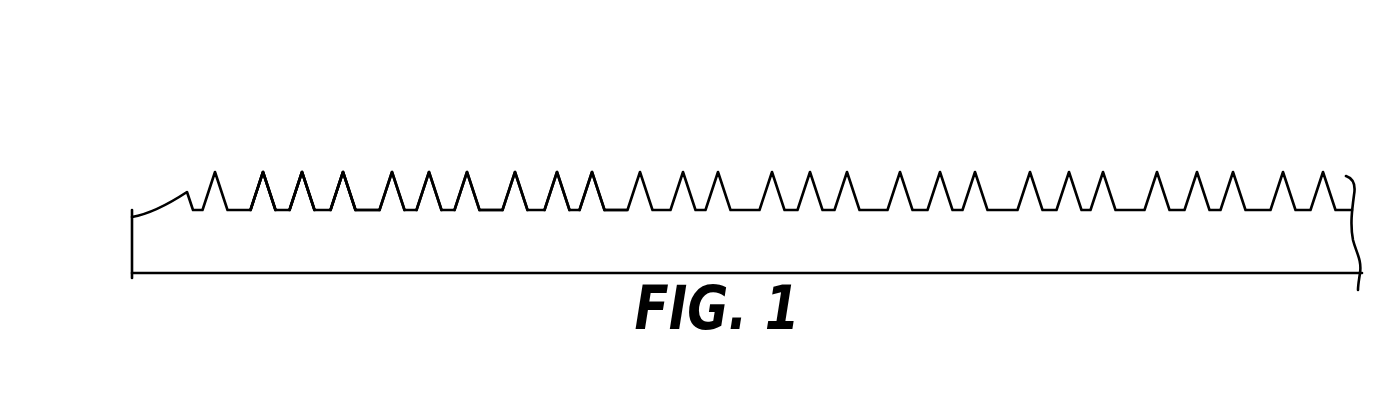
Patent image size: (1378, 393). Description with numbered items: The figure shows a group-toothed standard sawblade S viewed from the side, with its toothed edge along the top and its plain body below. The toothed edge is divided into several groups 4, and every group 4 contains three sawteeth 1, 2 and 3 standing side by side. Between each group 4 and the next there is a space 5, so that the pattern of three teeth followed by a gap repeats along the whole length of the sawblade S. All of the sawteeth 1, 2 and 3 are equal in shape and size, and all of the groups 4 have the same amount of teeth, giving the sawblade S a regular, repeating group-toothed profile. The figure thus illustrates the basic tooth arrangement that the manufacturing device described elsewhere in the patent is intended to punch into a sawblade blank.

The sawtooth 1 is at (262, 170).
The sawtooth 2 is at (302, 170).
The sawtooth 3 is at (343, 170).
The group 4 is at (350, 80).
The space 5 is at (367, 165).
The sawblade S is at (320, 232).